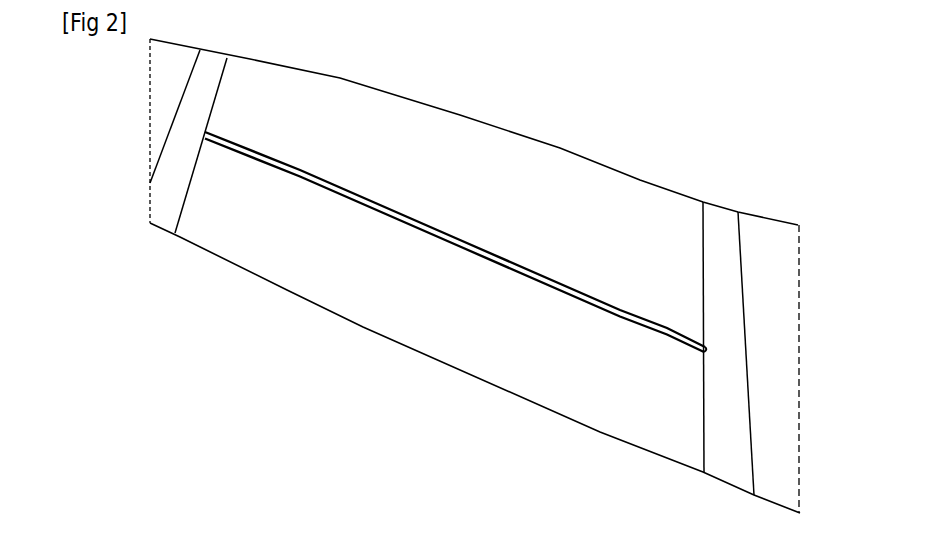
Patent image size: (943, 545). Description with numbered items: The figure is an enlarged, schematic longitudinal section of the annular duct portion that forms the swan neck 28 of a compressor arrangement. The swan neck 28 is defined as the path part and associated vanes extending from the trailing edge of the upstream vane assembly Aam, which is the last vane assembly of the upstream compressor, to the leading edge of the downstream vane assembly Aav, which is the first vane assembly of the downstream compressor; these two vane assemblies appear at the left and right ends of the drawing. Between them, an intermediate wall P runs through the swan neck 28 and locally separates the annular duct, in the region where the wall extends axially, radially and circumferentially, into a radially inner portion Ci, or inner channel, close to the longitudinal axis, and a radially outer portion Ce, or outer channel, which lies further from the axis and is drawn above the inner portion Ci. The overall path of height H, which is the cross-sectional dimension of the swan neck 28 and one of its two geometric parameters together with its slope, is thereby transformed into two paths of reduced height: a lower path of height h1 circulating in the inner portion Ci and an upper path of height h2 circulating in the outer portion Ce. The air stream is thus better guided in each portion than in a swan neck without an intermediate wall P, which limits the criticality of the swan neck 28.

The swan neck 28 is at (501, 276).
The upstream vane assembly Aam is at (187, 136).
The downstream vane assembly Aav is at (737, 368).
The radially outer portion Ce is at (675, 245).
The radially inner portion Ci is at (665, 402).
The intermediate wall P is at (667, 327).
The height H is at (205, 240).
The height of the lower path h1 is at (275, 178).
The height of the upper path h2 is at (300, 76).